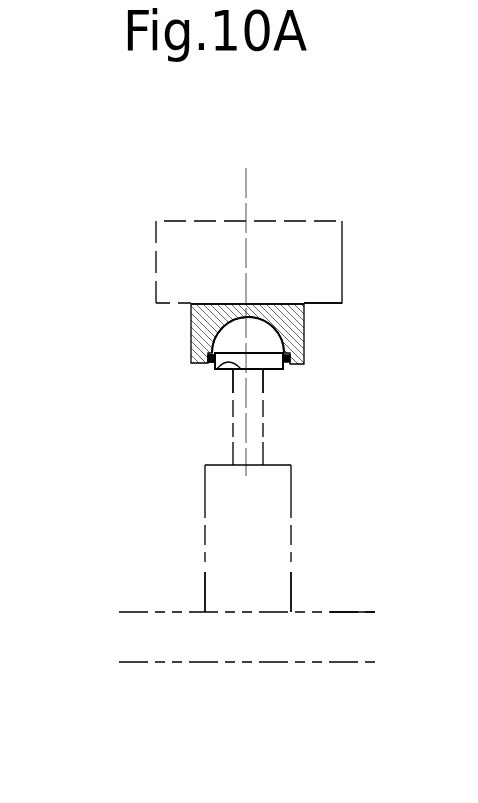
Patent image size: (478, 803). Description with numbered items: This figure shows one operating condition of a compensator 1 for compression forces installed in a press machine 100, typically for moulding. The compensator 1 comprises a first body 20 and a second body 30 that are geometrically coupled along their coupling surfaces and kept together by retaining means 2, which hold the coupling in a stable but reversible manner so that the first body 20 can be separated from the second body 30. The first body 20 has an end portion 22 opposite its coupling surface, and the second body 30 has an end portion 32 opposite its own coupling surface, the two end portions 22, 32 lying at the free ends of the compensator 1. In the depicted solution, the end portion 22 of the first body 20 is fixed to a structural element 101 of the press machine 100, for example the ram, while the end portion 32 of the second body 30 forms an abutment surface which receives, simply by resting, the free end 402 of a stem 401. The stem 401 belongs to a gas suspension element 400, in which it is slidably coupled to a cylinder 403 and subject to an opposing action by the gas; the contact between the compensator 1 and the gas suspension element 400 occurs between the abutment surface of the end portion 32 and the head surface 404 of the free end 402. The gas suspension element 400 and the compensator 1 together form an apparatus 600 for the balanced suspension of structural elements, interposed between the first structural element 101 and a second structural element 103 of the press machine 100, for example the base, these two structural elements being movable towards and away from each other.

The press machine 100 is at (130, 233).
The structural element 101 is at (324, 302).
The end portion 22 is at (292, 303).
The first body 20 is at (190, 320).
The compensator 1 is at (102, 323).
The retaining means 2 is at (291, 356).
The second body 30 is at (285, 372).
The end portion 32 is at (268, 372).
The head surface 404 is at (217, 370).
The stem 401 is at (284, 442).
The free end 402 is at (223, 382).
The gas suspension element 400 is at (305, 512).
The cylinder 403 is at (295, 568).
The apparatus for balanced suspension 600 is at (182, 543).
The second structural element 103 is at (330, 638).